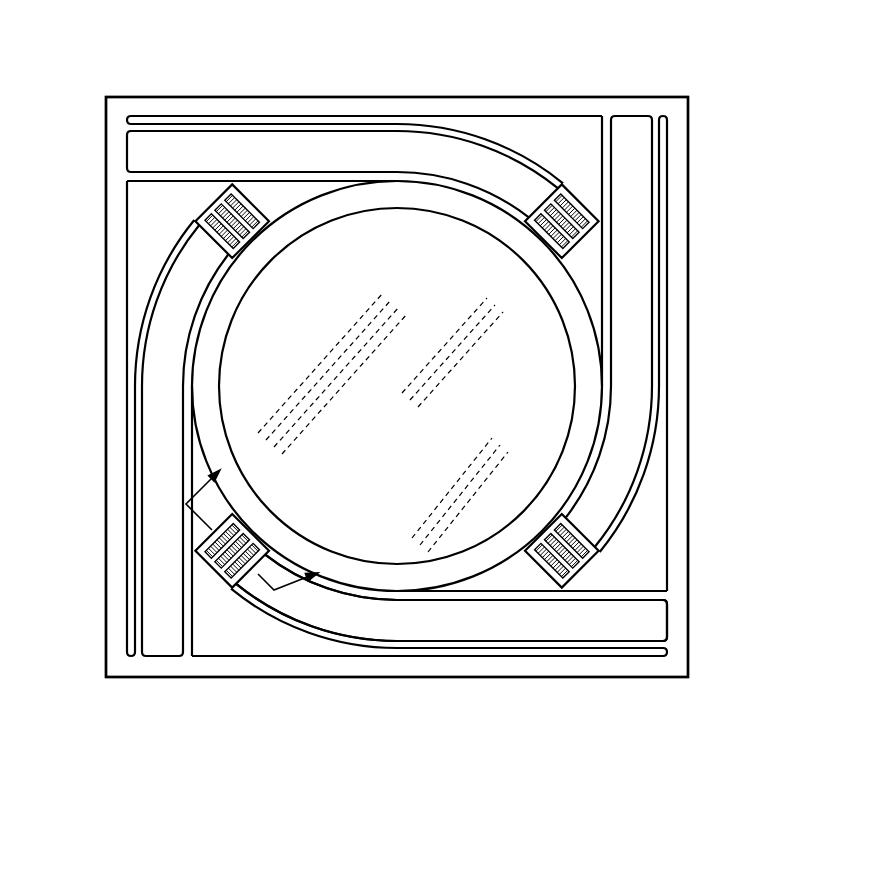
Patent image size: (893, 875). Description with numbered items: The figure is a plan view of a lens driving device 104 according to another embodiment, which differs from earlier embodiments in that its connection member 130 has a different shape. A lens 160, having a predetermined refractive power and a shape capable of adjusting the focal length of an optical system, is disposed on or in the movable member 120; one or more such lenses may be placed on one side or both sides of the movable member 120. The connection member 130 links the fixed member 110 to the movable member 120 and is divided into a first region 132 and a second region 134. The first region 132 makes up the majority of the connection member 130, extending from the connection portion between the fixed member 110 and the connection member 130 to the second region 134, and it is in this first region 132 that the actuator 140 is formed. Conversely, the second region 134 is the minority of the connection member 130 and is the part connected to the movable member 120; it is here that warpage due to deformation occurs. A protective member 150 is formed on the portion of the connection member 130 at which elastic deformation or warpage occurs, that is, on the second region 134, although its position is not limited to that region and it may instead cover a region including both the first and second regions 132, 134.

The lens driving device 104 is at (614, 68).
The fixed member 110 is at (676, 441).
The movable member 120 is at (565, 500).
The connection member 130 is at (351, 452).
The first region 132 is at (505, 712).
The second region 134 is at (92, 200).
The actuator 140 is at (610, 626).
The protective member 150 is at (578, 584).
The lens 160 is at (560, 372).